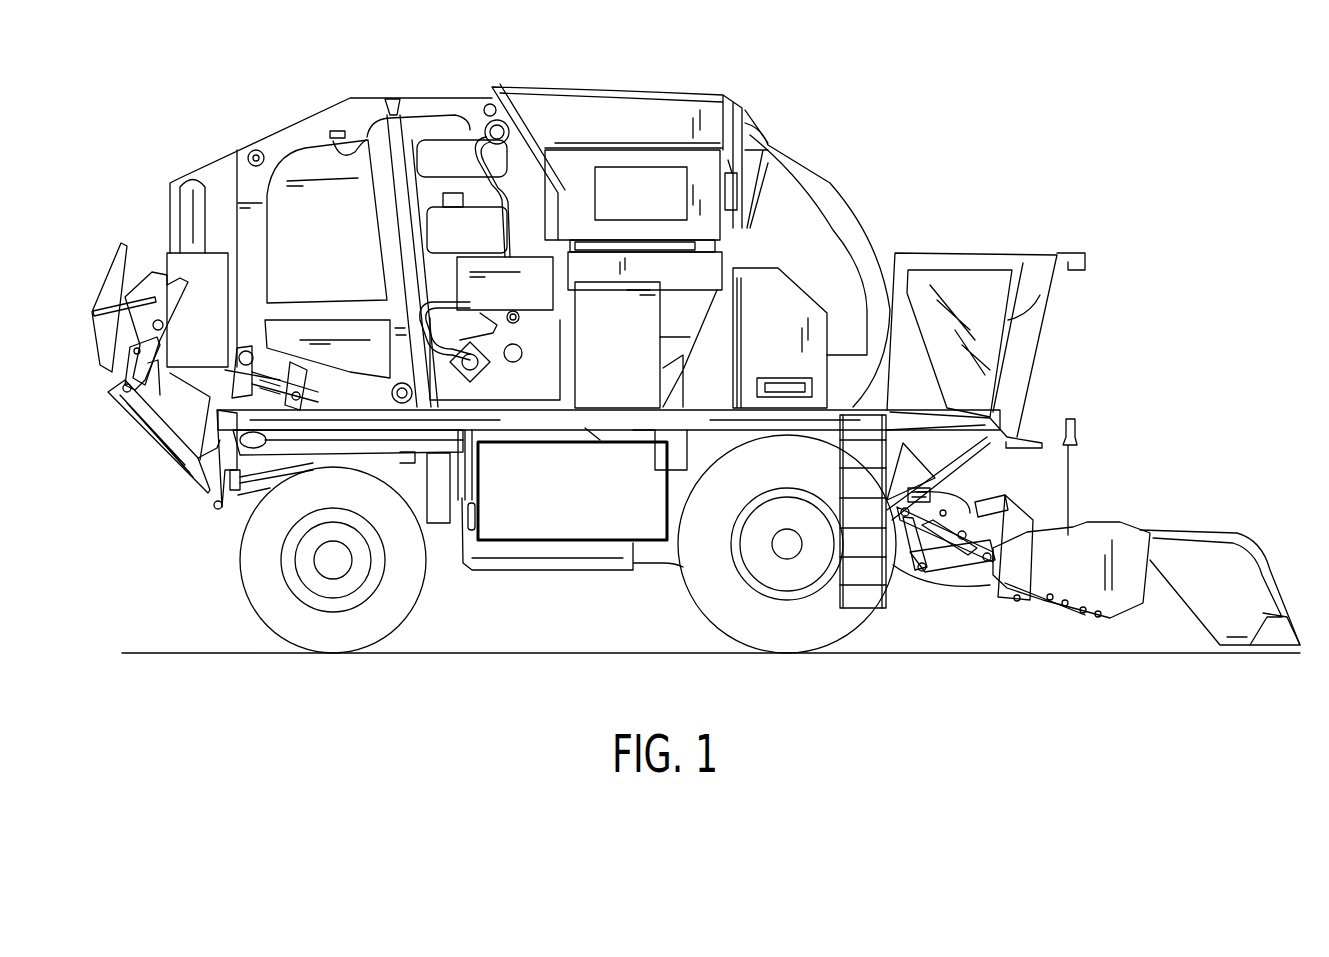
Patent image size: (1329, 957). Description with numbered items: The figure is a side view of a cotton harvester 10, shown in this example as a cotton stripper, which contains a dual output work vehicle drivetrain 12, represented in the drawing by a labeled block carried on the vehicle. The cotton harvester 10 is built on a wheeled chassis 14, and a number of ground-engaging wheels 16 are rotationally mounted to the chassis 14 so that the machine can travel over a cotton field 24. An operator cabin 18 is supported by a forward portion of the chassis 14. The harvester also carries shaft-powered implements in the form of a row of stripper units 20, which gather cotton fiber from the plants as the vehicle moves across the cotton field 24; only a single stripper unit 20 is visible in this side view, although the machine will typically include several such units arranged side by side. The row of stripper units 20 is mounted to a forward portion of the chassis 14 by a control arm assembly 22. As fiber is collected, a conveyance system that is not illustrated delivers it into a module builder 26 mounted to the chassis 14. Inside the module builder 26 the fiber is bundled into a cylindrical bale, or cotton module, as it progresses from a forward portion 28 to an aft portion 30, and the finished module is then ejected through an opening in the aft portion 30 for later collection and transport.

The cotton harvester 10 is at (978, 92).
The dual output work vehicle drivetrain 12 is at (587, 533).
The wheeled chassis 14 is at (595, 418).
The ground-engaging wheels 16 is at (256, 614).
The operator cabin 18 is at (975, 262).
The stripper units 20 is at (1203, 548).
The control arm assembly 22 is at (990, 503).
The cotton field 24 is at (498, 652).
The module builder 26 is at (346, 95).
The forward portion 28 is at (800, 185).
The aft portion 30 is at (185, 178).